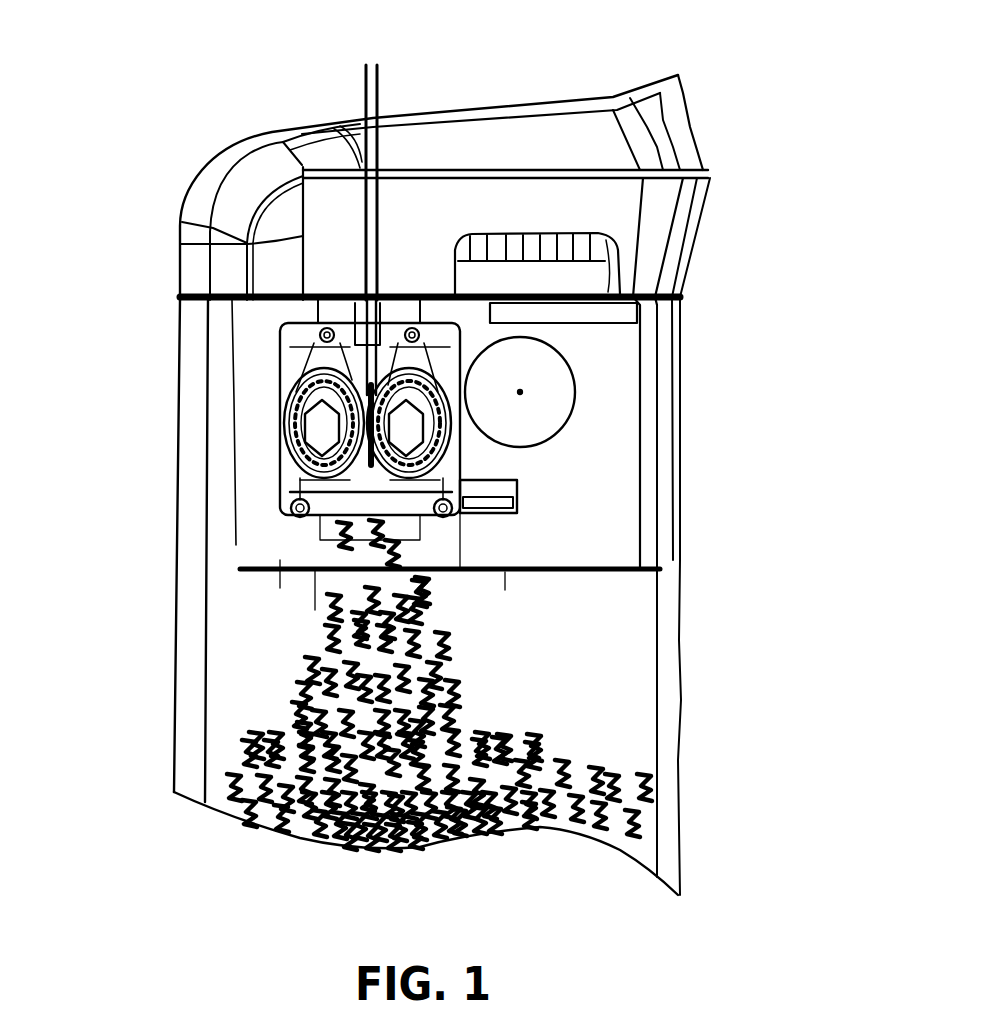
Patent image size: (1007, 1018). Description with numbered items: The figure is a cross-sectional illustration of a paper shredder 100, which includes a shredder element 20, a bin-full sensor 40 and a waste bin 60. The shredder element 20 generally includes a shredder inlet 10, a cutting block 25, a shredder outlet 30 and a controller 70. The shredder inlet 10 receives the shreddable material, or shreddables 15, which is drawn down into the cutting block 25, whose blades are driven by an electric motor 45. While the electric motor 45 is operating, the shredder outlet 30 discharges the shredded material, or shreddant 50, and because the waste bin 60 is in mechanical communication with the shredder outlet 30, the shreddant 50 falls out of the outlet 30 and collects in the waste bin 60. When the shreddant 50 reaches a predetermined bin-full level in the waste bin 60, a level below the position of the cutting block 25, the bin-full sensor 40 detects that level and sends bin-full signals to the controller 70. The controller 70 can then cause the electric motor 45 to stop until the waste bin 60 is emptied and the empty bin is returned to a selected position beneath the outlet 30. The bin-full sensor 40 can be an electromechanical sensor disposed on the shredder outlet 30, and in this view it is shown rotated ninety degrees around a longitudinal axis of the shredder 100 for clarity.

The shredder 100 is at (148, 266).
The shredder inlet 10 is at (348, 130).
The shreddables 15 is at (378, 78).
The shredder element 20 is at (233, 364).
The cutting block 25 is at (283, 414).
The shredder outlet 30 is at (332, 510).
The bin-full sensor 40 is at (517, 487).
The electric motor 45 is at (575, 392).
The shreddant 50 is at (462, 690).
The waste bin 60 is at (678, 752).
The controller 70 is at (633, 318).